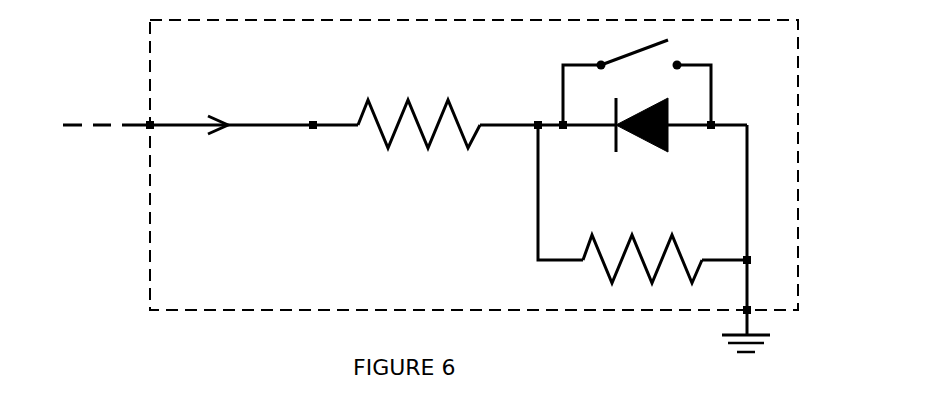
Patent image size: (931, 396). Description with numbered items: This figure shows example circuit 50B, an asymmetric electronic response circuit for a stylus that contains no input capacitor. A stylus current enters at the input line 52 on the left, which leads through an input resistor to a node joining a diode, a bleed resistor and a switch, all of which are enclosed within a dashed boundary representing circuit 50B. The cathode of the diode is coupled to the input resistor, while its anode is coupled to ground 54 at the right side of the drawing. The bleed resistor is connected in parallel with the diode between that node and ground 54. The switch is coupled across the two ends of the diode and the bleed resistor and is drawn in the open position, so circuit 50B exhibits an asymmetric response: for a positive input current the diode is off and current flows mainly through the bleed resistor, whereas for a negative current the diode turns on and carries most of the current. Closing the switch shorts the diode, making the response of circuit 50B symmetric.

The circuit 50B is at (146, 261).
The stylus input line 52 is at (102, 133).
The ground 54 is at (714, 335).